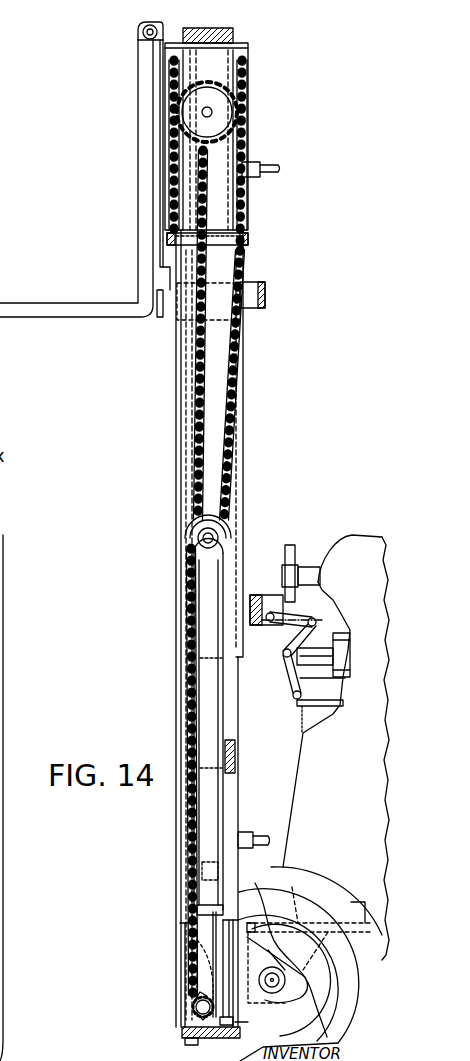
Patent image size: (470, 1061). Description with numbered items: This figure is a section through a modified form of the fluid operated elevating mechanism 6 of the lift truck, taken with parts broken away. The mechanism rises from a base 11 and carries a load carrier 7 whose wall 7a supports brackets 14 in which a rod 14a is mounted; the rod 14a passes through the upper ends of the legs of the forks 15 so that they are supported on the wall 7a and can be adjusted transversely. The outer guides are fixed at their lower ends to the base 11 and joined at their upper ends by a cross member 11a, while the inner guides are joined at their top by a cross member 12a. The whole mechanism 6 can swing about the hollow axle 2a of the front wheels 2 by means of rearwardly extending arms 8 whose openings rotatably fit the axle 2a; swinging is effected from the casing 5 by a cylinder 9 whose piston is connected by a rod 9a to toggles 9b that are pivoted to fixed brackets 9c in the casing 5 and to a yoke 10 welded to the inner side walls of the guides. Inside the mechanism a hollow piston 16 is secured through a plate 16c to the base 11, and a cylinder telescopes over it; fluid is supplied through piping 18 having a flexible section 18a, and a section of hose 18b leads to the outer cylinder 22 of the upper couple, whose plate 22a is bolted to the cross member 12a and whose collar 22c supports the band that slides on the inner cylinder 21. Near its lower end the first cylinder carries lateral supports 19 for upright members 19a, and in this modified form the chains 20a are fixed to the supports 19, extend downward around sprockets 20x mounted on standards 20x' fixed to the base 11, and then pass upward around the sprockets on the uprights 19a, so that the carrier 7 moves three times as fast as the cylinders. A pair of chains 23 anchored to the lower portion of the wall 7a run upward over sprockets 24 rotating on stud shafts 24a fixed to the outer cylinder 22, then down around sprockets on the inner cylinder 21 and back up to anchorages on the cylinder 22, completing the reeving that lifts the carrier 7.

The front wheels 2 is at (356, 987).
The hollow axle 2a is at (280, 995).
The casing 5 is at (3, 700).
The fluid operated elevating mechanism 6 is at (168, 705).
The load carrier 7 is at (121, 265).
The wall 7a is at (160, 300).
The rearwardly extending arms 8 is at (275, 940).
The cylinder 9 is at (350, 645).
The rod 9a is at (320, 606).
The toggles 9b is at (288, 688).
The fixed brackets 9c is at (300, 708).
The yoke 10 is at (266, 595).
The base 11 is at (182, 1034).
The cross member 11a is at (266, 303).
The cross member 12a is at (236, 34).
The brackets 14 is at (140, 20).
The rod 14a is at (138, 46).
The forks 15 is at (108, 316).
The piston 16 is at (183, 943).
The plate 16c is at (240, 1023).
The piping 18 is at (311, 566).
The flexible section 18a is at (260, 834).
The section of hose 18b is at (262, 180).
The laterally extending supports 19 is at (182, 903).
The upright members 19a is at (210, 797).
The chains 20a is at (190, 882).
The sprockets 20x is at (179, 995).
The standards 20x' is at (176, 1013).
The inner cylinder 21 is at (243, 463).
The outer cylinder 22 is at (248, 233).
The plate 22a is at (249, 58).
The collar 22c is at (250, 245).
The chains 23 is at (233, 405).
The sprockets 24 is at (235, 126).
The stud shafts 24a is at (212, 114).